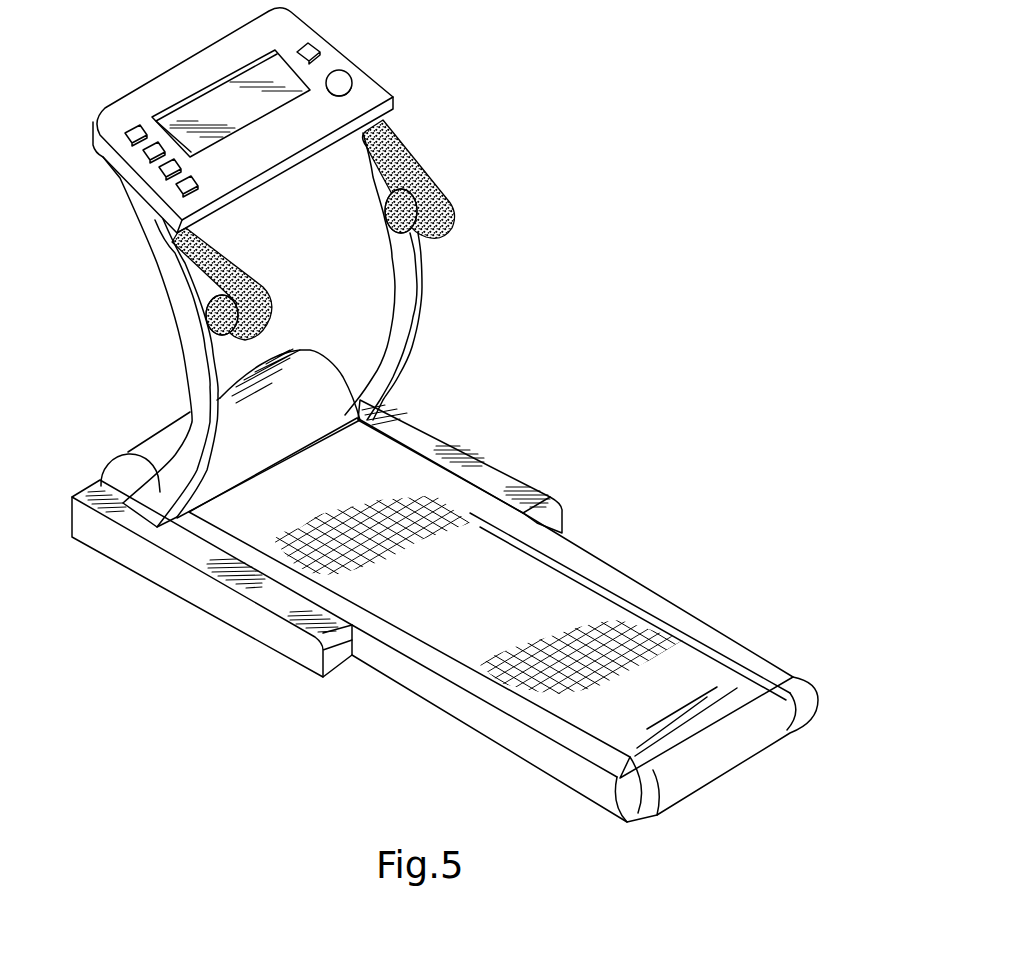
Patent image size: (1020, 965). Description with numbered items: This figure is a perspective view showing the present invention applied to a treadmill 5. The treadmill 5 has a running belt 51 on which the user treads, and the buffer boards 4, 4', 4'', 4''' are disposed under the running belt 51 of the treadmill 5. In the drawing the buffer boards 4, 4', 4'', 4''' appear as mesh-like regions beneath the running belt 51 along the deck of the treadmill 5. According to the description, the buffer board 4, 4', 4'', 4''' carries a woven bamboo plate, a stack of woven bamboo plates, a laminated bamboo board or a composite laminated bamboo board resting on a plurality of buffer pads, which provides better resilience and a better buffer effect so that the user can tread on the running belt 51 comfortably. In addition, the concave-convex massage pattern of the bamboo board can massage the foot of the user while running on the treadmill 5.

The treadmill 5 is at (469, 415).
The running belt 51 is at (700, 673).
The buffer board 4 is at (568, 597).
The buffer board 4' is at (371, 531).
The buffer board 4'' is at (581, 652).
The buffer board 4''' is at (575, 671).